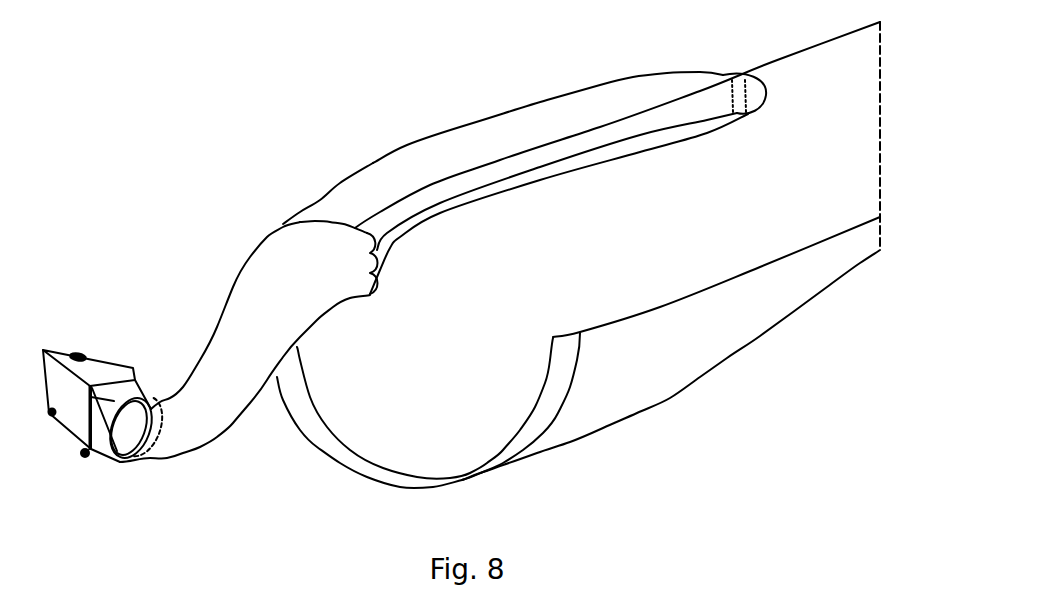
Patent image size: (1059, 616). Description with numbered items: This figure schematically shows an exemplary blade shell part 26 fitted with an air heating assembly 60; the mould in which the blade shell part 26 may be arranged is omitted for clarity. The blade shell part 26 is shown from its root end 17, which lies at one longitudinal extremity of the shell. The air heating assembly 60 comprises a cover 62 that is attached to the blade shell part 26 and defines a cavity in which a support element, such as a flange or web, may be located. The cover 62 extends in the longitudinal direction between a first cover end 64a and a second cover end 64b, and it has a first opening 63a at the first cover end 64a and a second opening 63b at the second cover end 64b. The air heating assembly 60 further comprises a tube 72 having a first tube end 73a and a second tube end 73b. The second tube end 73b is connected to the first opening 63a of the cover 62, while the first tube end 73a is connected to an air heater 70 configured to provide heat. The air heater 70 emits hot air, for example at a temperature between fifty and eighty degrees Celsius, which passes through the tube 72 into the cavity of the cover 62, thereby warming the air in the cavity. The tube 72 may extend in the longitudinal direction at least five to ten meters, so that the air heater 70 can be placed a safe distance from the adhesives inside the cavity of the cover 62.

The root end 17 is at (315, 453).
The blade shell part 26 is at (344, 110).
The air heating assembly 60 is at (185, 196).
The cover 62 is at (479, 138).
The first opening 63a is at (295, 243).
The second opening 63b is at (742, 98).
The first cover end 64a is at (305, 223).
The second cover end 64b is at (767, 83).
The air heater 70 is at (71, 354).
The tube 72 is at (190, 428).
The first tube end 73a is at (122, 445).
The second tube end 73b is at (347, 237).